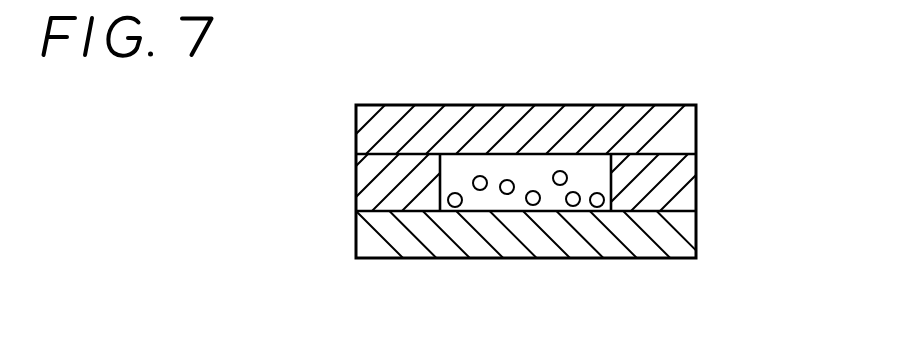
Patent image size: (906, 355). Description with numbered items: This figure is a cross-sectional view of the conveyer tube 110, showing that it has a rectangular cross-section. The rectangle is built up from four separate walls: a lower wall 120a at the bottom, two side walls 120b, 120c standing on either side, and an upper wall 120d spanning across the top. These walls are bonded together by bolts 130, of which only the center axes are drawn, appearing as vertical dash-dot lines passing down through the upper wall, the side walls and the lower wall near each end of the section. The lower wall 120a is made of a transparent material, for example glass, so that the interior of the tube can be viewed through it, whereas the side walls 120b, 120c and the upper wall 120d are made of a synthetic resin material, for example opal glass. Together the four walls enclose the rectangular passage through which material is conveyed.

The conveyer tube 110 is at (678, 92).
The lower wall 120a is at (548, 249).
The side wall 120b is at (693, 182).
The side wall 120c is at (371, 185).
The upper wall 120d is at (571, 105).
The bolts 130 is at (399, 82).